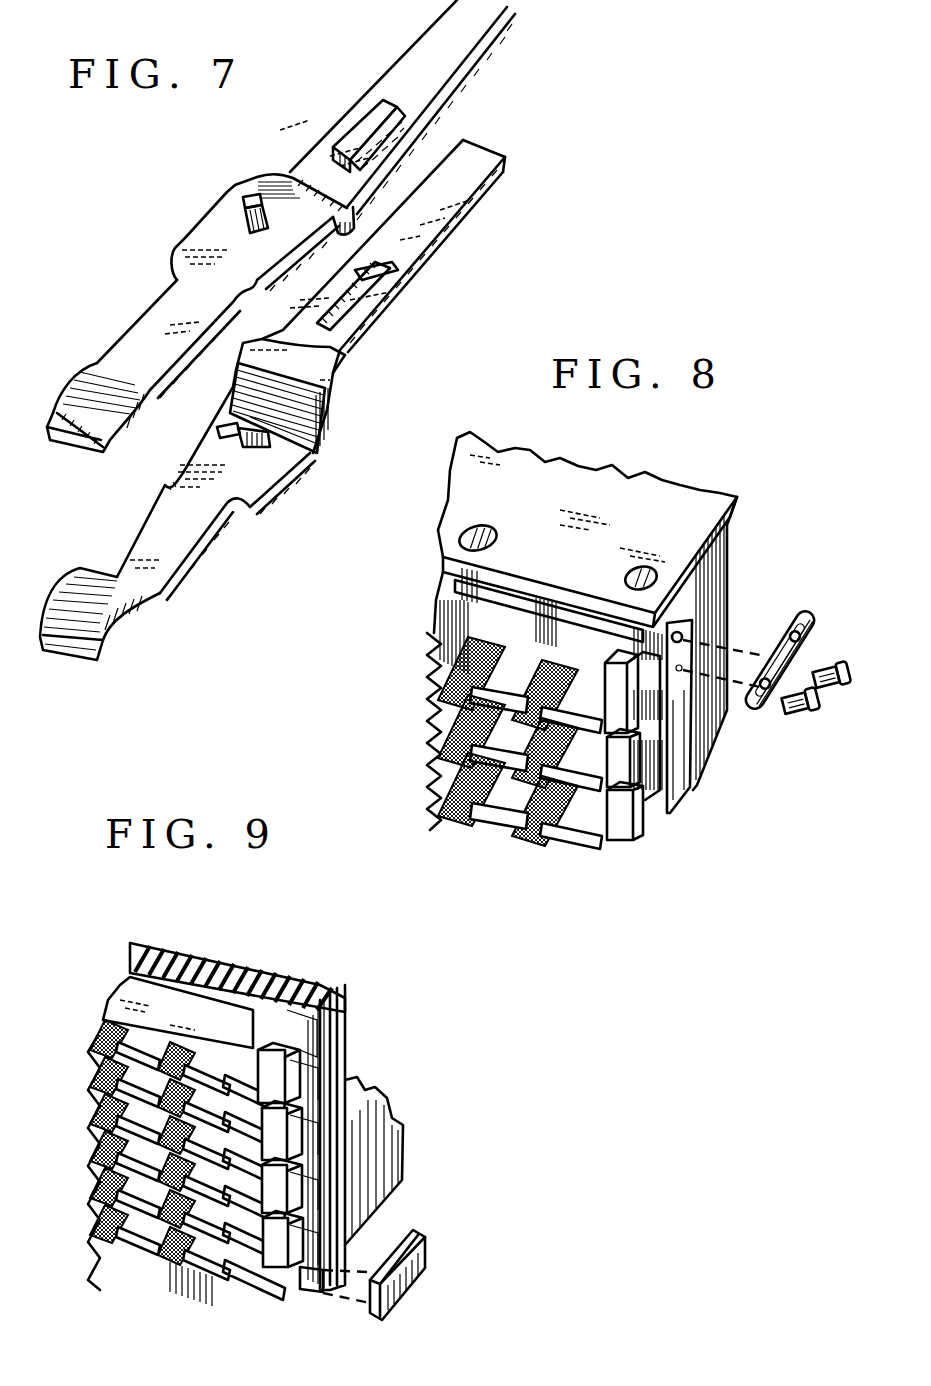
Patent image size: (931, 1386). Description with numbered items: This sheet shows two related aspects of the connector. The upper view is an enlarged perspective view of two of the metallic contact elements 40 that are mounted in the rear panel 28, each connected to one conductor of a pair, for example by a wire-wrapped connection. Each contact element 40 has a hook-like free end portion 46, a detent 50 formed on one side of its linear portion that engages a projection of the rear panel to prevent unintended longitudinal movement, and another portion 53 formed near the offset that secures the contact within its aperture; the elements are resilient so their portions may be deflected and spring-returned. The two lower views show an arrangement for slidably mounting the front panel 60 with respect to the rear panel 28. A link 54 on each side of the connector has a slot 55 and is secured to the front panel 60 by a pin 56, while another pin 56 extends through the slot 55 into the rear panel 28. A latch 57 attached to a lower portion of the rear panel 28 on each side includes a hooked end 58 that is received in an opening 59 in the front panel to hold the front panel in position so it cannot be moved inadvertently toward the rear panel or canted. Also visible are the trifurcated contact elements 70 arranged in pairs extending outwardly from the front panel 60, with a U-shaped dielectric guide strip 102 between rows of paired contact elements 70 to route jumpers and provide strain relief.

In FIG. 7, the contact element 40 is at (480, 22).
In FIG. 7, the free end portion 46 is at (90, 388).
In FIG. 7, the detent 50 is at (350, 128).
In FIG. 7, the portion of the contact element 53 is at (243, 212).
In FIG. 8, the front panel 60 is at (490, 620).
In FIG. 9, the front panel 60 is at (130, 973).
In FIG. 8, the trifurcated contact element 70 is at (445, 768).
In FIG. 9, the trifurcated contact element 70 is at (103, 1160).
In FIG. 8, the link 54 is at (797, 610).
In FIG. 8, the slot 55 is at (818, 622).
In FIG. 8, the pin 56 is at (787, 712).
In FIG. 8, the rear panel 28 is at (683, 787).
In FIG. 8, the guide strip 102 is at (575, 840).
In FIG. 9, the latch 57 is at (425, 1252).
In FIG. 9, the hooked end 58 is at (370, 1267).
In FIG. 9, the opening 59 is at (314, 1293).